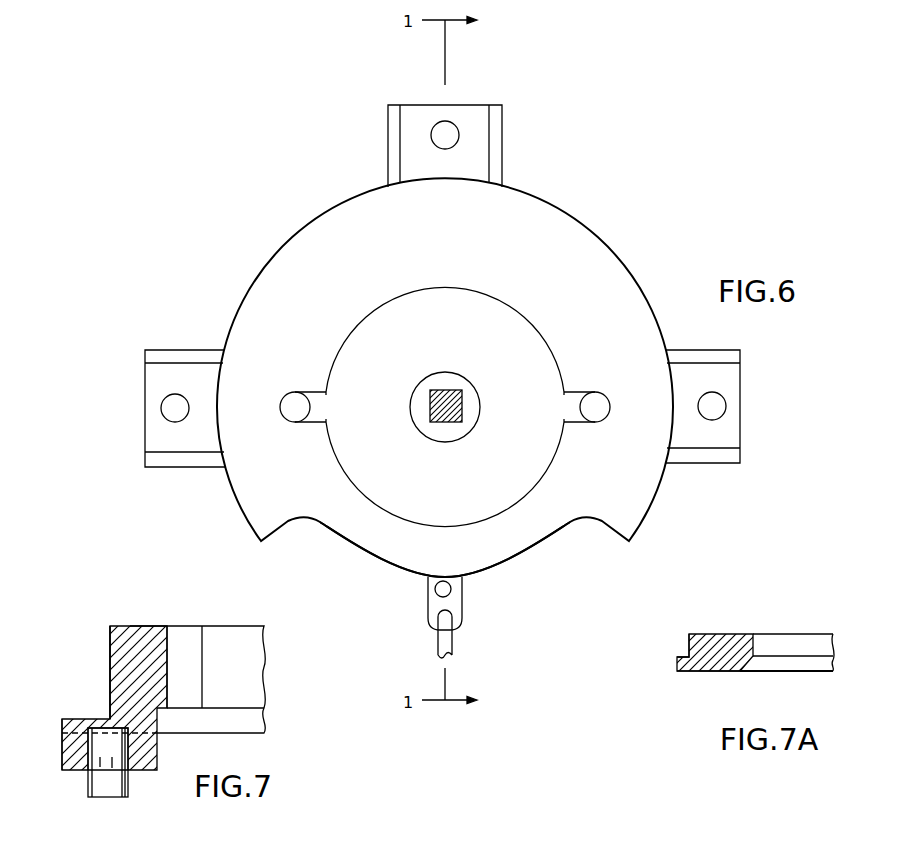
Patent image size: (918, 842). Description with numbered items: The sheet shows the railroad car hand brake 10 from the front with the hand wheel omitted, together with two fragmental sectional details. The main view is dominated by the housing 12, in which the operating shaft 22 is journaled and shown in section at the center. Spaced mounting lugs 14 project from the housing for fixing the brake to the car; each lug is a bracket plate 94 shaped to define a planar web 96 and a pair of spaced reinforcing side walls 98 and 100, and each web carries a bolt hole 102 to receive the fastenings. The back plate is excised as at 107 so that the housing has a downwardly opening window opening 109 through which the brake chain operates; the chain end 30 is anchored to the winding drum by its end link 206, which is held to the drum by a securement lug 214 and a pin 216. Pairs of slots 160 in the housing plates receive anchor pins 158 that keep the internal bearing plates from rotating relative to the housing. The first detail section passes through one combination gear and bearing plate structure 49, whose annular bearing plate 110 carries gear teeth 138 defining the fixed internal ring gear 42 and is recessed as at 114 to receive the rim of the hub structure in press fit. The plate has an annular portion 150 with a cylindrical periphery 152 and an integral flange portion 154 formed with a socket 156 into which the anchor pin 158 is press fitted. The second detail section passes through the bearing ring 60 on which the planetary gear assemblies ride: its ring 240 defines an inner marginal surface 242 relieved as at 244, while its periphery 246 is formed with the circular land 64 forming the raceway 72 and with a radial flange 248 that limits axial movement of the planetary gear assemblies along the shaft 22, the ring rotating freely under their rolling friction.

In FIG. 6, the hand brake 10 is at (692, 225).
In FIG. 6, the housing 12 is at (606, 208).
In FIG. 6, the mounting lugs 14 is at (371, 158).
In FIG. 6, the operating shaft 22 is at (457, 373).
In FIG. 6, the brake chain end 30 is at (462, 608).
In FIG. 7, the fixed internal ring gear 42 is at (165, 672).
In FIG. 7, the combination gear and bearing plate structure 49 is at (148, 618).
In FIG. 7A, the bearing ring 60 is at (787, 623).
In FIG. 7A, the circular land 64 is at (689, 645).
In FIG. 7A, the raceway 72 is at (652, 642).
In FIG. 6, the bracket plate 94 is at (472, 110).
In FIG. 6, the planar web 96 is at (428, 112).
In FIG. 6, the reinforcing side wall 98 is at (392, 128).
In FIG. 6, the reinforcing side wall 100 is at (495, 132).
In FIG. 6, the bolt hole 102 is at (450, 138).
In FIG. 6, the excised portion 107 is at (525, 571).
In FIG. 6, the window opening 109 is at (406, 568).
In FIG. 7, the bearing plate 110 is at (124, 630).
In FIG. 7, the recess 114 is at (160, 718).
In FIG. 7, the gear teeth 138 is at (192, 660).
In FIG. 7, the annular portion 150 is at (162, 630).
In FIG. 7, the cylindrical periphery 152 is at (110, 650).
In FIG. 7, the flange portion 154 is at (62, 750).
In FIG. 7, the socket 156 is at (122, 755).
In FIG. 6, the anchor pin 158 is at (320, 394).
In FIG. 7, the anchor pin 158 is at (105, 768).
In FIG. 6, the slot 160 is at (327, 400).
In FIG. 6, the chain link 206 is at (455, 650).
In FIG. 6, the securement lug 214 is at (458, 583).
In FIG. 6, the pin 216 is at (443, 580).
In FIG. 7A, the ring 240 is at (718, 660).
In FIG. 7A, the inner marginal surface 242 is at (815, 637).
In FIG. 7A, the relieved portion 244 is at (815, 663).
In FIG. 7A, the periphery 246 is at (678, 663).
In FIG. 7A, the radial flange 248 is at (686, 671).